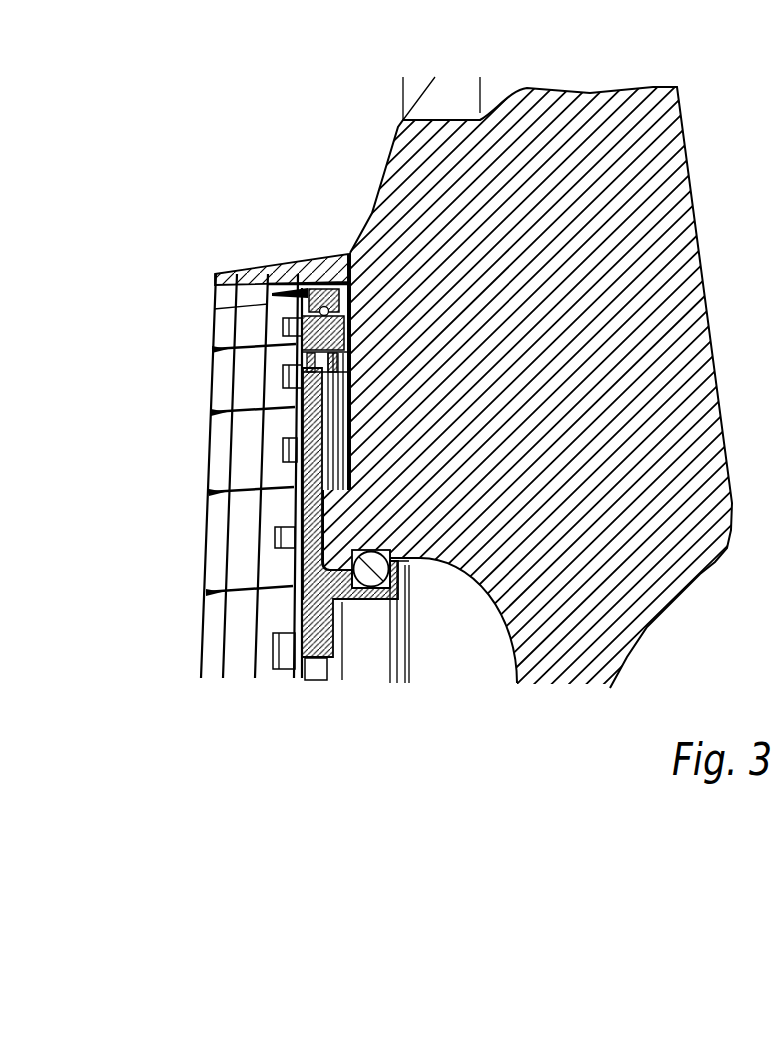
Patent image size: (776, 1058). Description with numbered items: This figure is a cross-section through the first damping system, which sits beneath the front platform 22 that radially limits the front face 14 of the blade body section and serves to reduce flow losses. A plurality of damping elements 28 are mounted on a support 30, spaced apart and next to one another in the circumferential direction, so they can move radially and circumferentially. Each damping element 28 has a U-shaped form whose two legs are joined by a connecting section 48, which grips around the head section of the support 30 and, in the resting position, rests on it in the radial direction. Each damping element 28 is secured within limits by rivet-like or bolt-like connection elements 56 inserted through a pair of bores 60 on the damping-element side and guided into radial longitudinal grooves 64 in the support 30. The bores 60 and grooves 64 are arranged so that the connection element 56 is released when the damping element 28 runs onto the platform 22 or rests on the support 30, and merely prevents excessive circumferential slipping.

The connecting section 48 is at (280, 262).
The front platform 22 is at (257, 265).
The damping element 28 is at (217, 275).
The longitudinal groove 64 is at (295, 323).
The connection element 56 is at (295, 335).
The bore 60 is at (293, 365).
The front face 14 is at (293, 455).
The support 30 is at (292, 516).